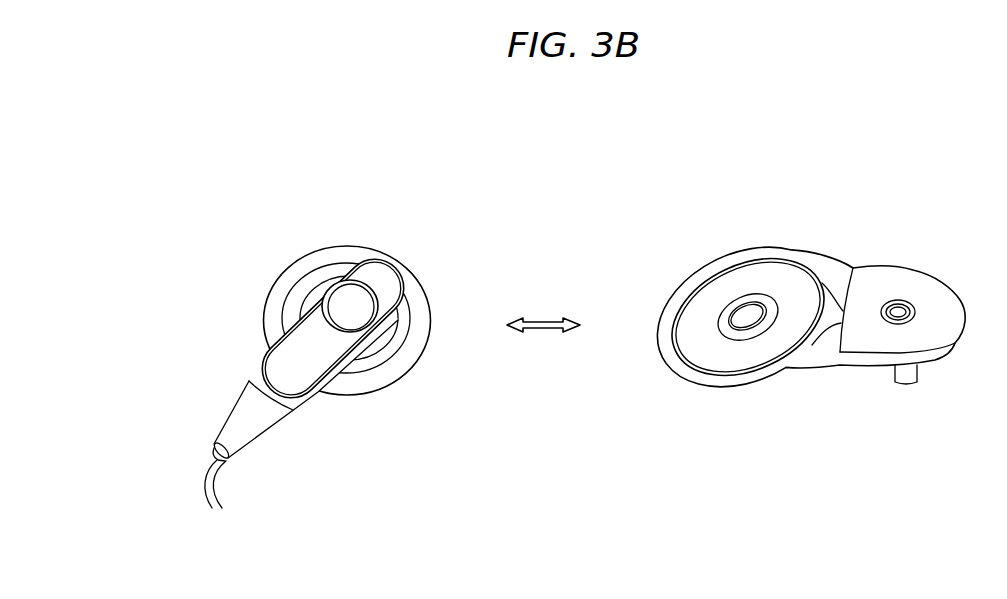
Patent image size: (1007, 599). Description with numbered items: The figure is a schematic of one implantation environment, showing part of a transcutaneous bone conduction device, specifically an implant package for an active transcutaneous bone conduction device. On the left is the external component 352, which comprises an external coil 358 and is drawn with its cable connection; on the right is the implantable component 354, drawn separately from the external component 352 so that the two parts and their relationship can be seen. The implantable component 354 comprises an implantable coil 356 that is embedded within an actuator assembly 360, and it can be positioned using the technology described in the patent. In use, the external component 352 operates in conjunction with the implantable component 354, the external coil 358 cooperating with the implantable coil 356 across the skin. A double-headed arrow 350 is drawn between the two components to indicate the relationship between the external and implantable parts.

The attachment/detachment direction 350 is at (543, 317).
The external component 352 is at (265, 377).
The implantable component 354 is at (830, 294).
The implantable coil 356 is at (705, 268).
The external coil 358 is at (400, 384).
The actuator assembly 360 is at (957, 350).